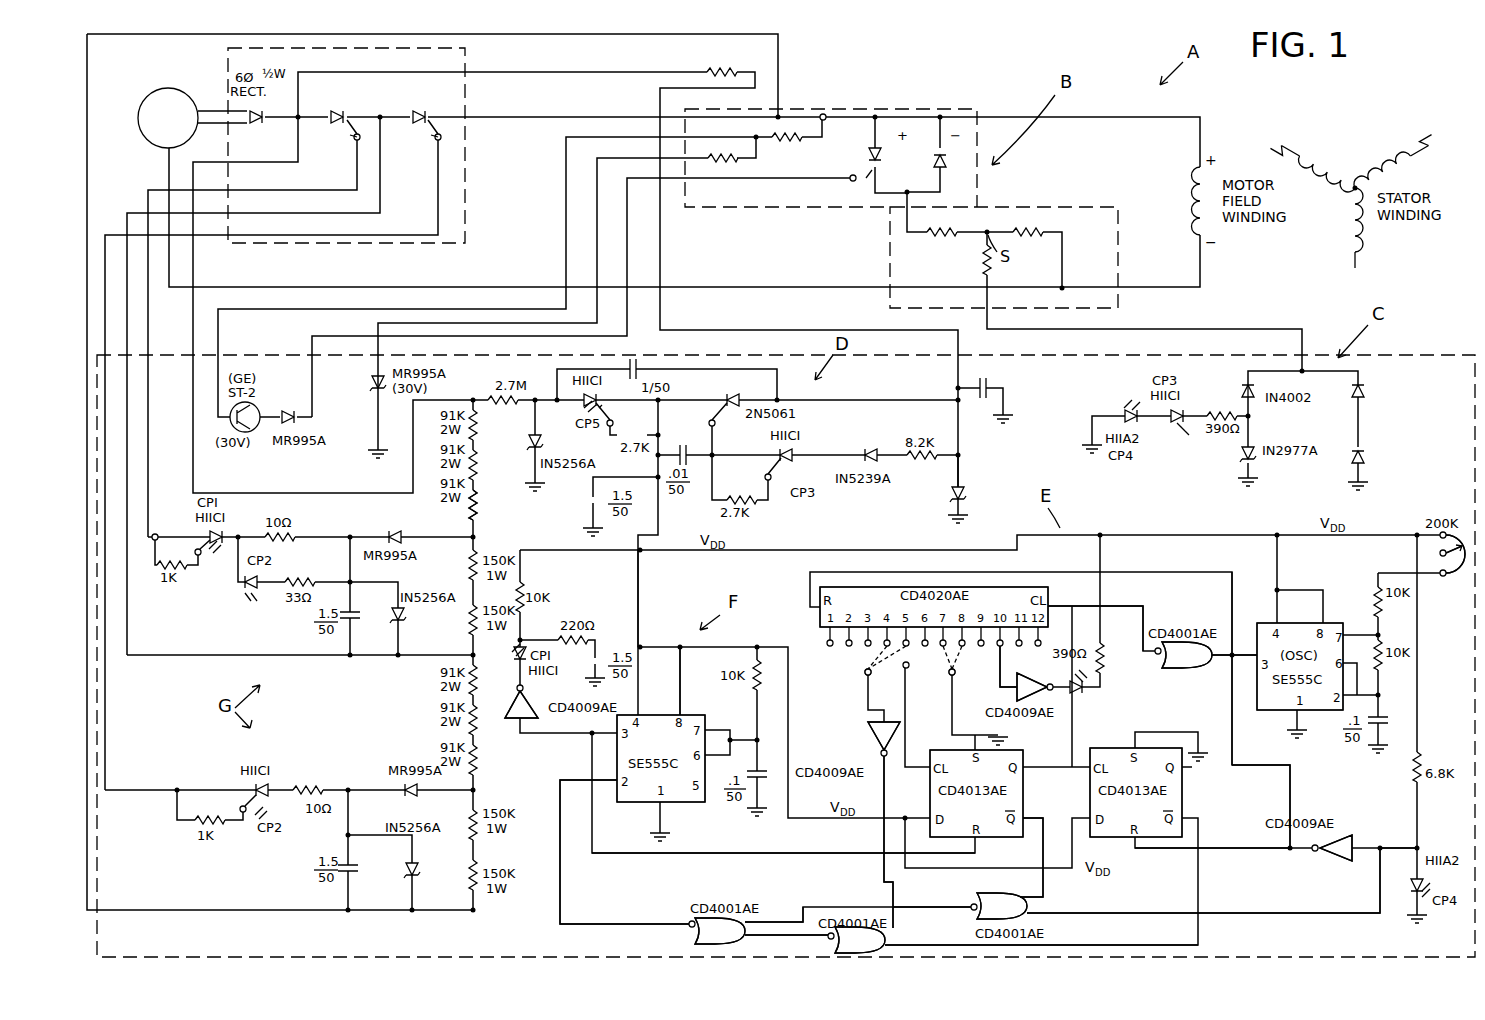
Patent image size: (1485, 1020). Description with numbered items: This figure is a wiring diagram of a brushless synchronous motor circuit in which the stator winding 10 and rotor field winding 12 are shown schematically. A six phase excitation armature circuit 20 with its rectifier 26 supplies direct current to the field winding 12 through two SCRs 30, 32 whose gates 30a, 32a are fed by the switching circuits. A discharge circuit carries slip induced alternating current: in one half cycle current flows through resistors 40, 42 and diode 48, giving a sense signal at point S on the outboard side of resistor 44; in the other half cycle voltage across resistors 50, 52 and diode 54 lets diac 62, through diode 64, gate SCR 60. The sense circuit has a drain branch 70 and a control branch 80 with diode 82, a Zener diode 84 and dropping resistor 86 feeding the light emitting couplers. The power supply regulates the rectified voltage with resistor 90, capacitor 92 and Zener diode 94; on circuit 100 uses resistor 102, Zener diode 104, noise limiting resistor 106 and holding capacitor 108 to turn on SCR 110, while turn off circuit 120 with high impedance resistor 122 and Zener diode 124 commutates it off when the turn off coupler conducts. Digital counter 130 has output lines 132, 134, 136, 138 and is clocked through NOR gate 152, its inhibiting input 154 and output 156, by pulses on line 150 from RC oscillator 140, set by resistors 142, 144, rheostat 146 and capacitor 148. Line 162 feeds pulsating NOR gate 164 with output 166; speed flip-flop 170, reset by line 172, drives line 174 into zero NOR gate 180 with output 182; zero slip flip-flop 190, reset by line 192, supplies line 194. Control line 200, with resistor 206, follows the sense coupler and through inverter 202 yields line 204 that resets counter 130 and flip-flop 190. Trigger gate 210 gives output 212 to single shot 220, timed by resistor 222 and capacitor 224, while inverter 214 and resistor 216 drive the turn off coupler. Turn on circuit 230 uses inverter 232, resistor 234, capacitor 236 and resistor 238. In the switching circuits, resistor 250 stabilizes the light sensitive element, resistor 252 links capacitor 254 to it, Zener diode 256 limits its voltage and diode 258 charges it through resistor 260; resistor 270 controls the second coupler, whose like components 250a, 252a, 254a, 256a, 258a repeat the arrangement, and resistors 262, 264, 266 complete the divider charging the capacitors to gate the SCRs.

The stator winding 10 is at (1418, 140).
The rotor field winding 12 is at (1215, 182).
The six phase excitation armature circuit 20 is at (183, 90).
The six phase rectifier 26 is at (257, 123).
The SCR 30 is at (336, 108).
The gate 30a is at (350, 140).
The SCR 32 is at (418, 108).
The gate 32a is at (430, 140).
The resistor 40 is at (935, 232).
The resistor 42 is at (1028, 228).
The resistor 44 is at (982, 268).
The diode 48 is at (950, 152).
The resistor 50 is at (790, 130).
The resistor 52 is at (730, 162).
The diode 54 is at (372, 382).
The SCR 60 is at (865, 155).
The diac 62 is at (260, 428).
The diode 64 is at (284, 410).
The drain branch 70 is at (1365, 418).
The control branch 80 is at (1215, 373).
The diode 82 is at (1258, 408).
The zener diode 84 is at (1262, 462).
The dropping resistor 86 is at (1215, 428).
The resistor 90 is at (720, 72).
The capacitor 92 is at (988, 388).
The Zener diode 94 is at (965, 500).
The on circuit 100 is at (853, 442).
The resistor 102 is at (928, 466).
The Zener diode 104 is at (880, 447).
The noise limiting resistor 106 is at (770, 505).
The capacitor 108 is at (682, 448).
The SCR 110 is at (722, 395).
The turn off circuit 120 is at (538, 370).
The high impedance resistor 122 is at (497, 458).
The Zener diode 124 is at (548, 440).
The digital counter 130 is at (1030, 588).
The output line 132 is at (868, 700).
The output line 134 is at (896, 710).
The output line 136 is at (950, 700).
The output line 138 is at (1000, 665).
The adjustable RC oscillator 140 is at (1328, 622).
The resistor 142 is at (1385, 655).
The resistor 144 is at (1385, 605).
The rheostat 146 is at (1454, 568).
The capacitor 148 is at (1395, 718).
The line 150 is at (1220, 668).
The NOR gate 152 is at (1185, 668).
The inhibiting input 154 is at (1233, 642).
The output 156 is at (1122, 608).
The line 162 is at (897, 890).
The pulsating NOR gate 164 is at (888, 942).
The output 166 is at (770, 920).
The speed responsive flip-flop 170 is at (1032, 765).
The line 172 is at (780, 853).
The line 174 is at (1046, 890).
The zero NOR gate 180 is at (1002, 896).
The output 182 is at (795, 905).
The zero slip flip-flop 190 is at (1191, 785).
The reset line 192 is at (1255, 850).
The line 194 is at (1100, 948).
The control line 200 is at (1400, 845).
The inverter 202 is at (1335, 855).
The line 204 is at (1248, 765).
The resistor 206 is at (1417, 760).
The trigger control gate 210 is at (690, 922).
The output 212 is at (562, 882).
The inverter 214 is at (1022, 684).
The voltage drop resistor 216 is at (1103, 660).
The single shot device 220 is at (700, 706).
The resistor 222 is at (770, 672).
The capacitor 224 is at (770, 770).
The SCR turn on circuit 230 is at (533, 741).
The inverter 232 is at (533, 705).
The resistor 234 is at (525, 588).
The capacitor 236 is at (635, 648).
The resistor 238 is at (557, 635).
The resistor 250 is at (185, 572).
The resistor 250a is at (208, 812).
The resistor 252 is at (285, 532).
The resistor 252a is at (310, 785).
The capacitor 254 is at (343, 622).
The capacitor 254a is at (352, 880).
The Zener diode 256 is at (395, 630).
The Zener diode 256a is at (415, 888).
The diode 258 is at (398, 532).
The diode 258a is at (410, 798).
The resistor 260 is at (476, 500).
The resistor 262 is at (472, 578).
The resistor 264 is at (476, 722).
The resistor 266 is at (478, 855).
The resistor 270 is at (297, 577).